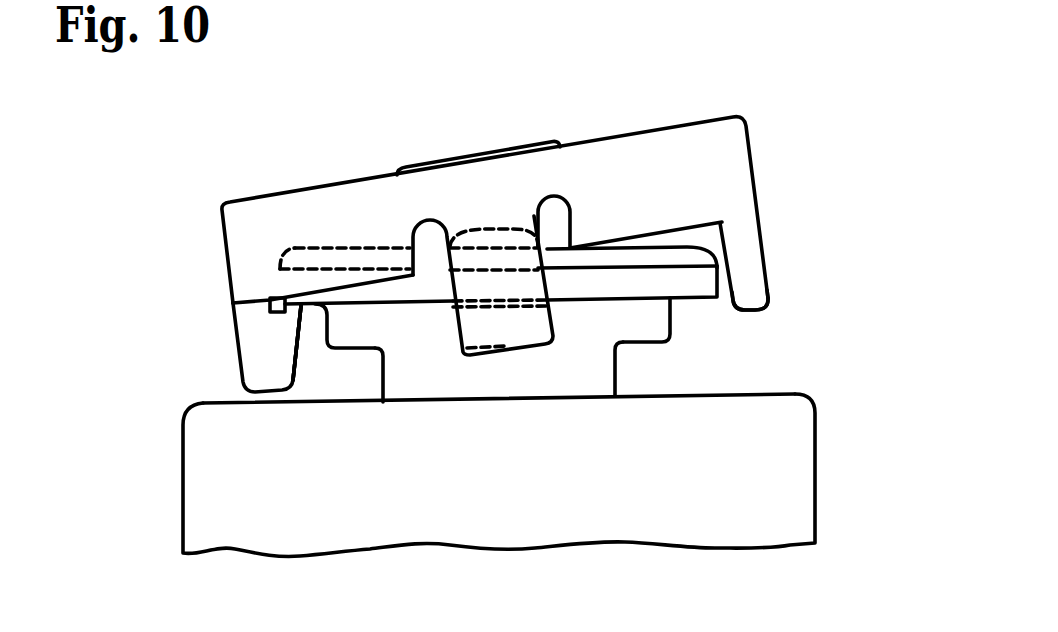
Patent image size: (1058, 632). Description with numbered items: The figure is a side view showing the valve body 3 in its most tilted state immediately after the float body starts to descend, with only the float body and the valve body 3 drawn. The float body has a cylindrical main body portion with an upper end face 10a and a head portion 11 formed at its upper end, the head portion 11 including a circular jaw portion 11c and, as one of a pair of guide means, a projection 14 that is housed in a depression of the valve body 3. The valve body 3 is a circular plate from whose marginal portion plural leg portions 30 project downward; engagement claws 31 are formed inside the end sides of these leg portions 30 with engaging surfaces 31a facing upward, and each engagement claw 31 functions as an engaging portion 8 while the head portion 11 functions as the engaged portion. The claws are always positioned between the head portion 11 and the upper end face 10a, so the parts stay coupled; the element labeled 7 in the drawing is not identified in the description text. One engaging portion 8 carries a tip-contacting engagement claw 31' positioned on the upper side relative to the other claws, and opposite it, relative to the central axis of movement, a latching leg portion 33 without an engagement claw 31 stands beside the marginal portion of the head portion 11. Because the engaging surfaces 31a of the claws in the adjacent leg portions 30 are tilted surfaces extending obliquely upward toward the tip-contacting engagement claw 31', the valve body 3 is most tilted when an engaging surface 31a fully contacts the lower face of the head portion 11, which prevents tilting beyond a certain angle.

The valve body 3 is at (733, 140).
The base housing 7 is at (780, 493).
The engaging portion 8 is at (283, 320).
The upper end face of the main body portion 10a is at (747, 390).
The head portion 11 is at (598, 257).
The circular jaw portion 11c is at (670, 253).
The projection 14 is at (490, 230).
The leg portion 30 is at (233, 330).
The engagement claw 31 is at (182, 346).
The tip-contacting engagement claw 31' is at (182, 346).
The engaging surface 31a is at (279, 299).
The latching leg portion 33 is at (767, 287).